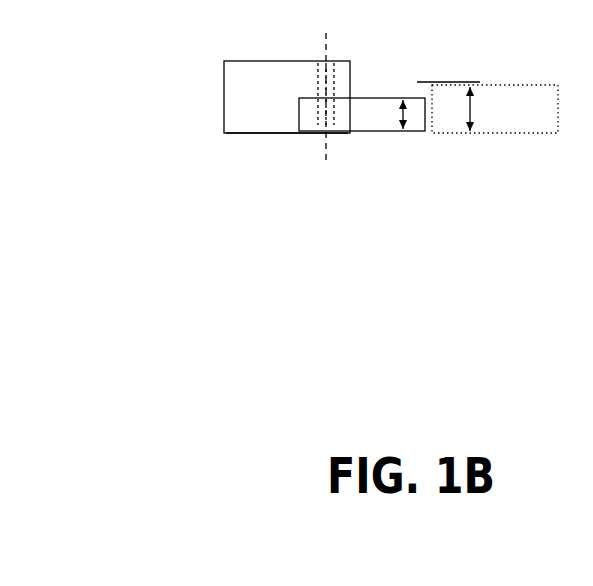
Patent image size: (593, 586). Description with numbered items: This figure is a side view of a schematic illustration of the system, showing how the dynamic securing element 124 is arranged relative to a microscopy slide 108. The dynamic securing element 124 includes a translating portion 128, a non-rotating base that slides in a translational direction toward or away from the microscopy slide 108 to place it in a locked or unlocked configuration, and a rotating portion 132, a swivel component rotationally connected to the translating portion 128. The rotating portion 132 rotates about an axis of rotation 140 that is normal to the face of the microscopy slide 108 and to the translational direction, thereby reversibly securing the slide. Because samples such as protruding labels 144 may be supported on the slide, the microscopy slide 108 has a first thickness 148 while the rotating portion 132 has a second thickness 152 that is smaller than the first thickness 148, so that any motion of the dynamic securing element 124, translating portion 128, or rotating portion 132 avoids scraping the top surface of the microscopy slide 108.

The microscopy slide 108 is at (556, 82).
The dynamic securing element 124 is at (212, 72).
The translating portion 128 is at (237, 134).
The rotating portion 132 is at (412, 132).
The axis of rotation 140 is at (325, 115).
The protruding labels 144 is at (427, 80).
The first thickness 148 is at (494, 109).
The second thickness 152 is at (379, 114).